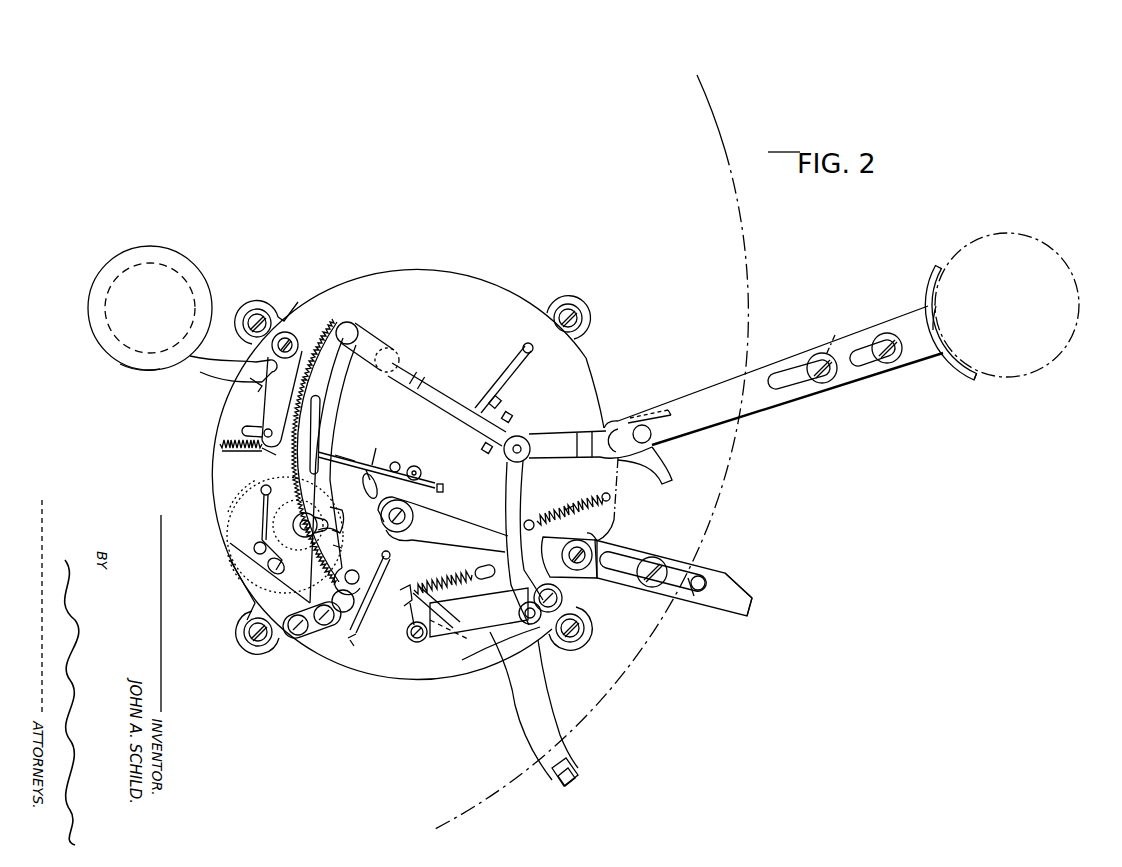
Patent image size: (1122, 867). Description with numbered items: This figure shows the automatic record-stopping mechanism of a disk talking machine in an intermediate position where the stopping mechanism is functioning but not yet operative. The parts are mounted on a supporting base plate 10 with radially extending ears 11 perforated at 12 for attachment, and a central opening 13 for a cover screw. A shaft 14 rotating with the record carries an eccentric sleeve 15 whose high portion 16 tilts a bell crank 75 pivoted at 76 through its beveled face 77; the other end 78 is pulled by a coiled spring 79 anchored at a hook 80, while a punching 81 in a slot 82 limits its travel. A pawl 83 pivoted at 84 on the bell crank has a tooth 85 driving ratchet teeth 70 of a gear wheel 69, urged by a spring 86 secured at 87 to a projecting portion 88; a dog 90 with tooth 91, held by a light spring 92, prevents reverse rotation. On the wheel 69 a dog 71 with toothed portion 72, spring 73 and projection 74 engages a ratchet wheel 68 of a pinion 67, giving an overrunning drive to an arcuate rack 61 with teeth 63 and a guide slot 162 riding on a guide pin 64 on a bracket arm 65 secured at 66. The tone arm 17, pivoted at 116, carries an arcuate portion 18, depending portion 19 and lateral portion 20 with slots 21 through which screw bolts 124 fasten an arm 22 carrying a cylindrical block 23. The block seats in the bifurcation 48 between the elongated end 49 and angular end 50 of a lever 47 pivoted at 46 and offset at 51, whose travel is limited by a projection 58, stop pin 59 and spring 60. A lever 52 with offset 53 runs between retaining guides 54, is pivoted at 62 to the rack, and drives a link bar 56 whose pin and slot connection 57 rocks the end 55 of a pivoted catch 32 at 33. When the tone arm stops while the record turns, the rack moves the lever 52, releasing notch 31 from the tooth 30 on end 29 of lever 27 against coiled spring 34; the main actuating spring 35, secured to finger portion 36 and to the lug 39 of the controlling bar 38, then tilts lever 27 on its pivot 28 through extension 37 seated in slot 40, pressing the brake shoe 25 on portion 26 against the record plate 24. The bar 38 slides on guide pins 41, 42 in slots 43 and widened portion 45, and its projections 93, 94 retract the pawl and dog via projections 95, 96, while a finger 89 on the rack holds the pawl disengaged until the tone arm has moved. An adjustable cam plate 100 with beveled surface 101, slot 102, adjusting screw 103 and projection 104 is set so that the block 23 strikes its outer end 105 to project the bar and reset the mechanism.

The supporting base plate 10 is at (423, 272).
The radially extending ears 11 is at (263, 306).
The perforations 12 is at (253, 312).
The central opening 13 is at (419, 466).
The shaft 14 is at (155, 272).
The eccentric sleeve 15 is at (192, 270).
The high portion 16 is at (140, 370).
The tone arm 17 is at (970, 380).
The arcuate portion 18 is at (935, 276).
The depending portion 19 is at (932, 333).
The lateral portion 20 is at (873, 372).
The elongated slots 21 is at (802, 384).
The finger or arm portion 22 is at (722, 388).
The cylindrical block or projection 23 is at (643, 425).
The disk record supporting plate 24 is at (603, 695).
The brake shoe 25 is at (566, 768).
The upwardly extending portion 26 is at (574, 770).
The lever 27 is at (540, 710).
The pivot 28 is at (562, 600).
The end of lever 29 is at (443, 607).
The tooth 30 is at (428, 592).
The notch 31 is at (412, 600).
The pivoted catch 32 is at (407, 603).
The pivot 33 is at (417, 643).
The coiled spring 34 is at (448, 570).
The main actuating spring 35 is at (550, 512).
The finger portion 36 is at (612, 499).
The extension 37 is at (542, 558).
The controlling bar 38 is at (470, 528).
The spring retaining lug 39 is at (528, 520).
The elongated slot 40 is at (571, 507).
The guide pin 41 is at (402, 533).
The guide pin 42 is at (586, 553).
The slot 43 is at (383, 501).
The widened portion 45 is at (590, 535).
The pivot 46 is at (531, 460).
The lever 47 is at (557, 440).
The bifurcation 48 is at (625, 427).
The elongated end 49 is at (673, 414).
The angularly extending end 50 is at (672, 477).
The offset 51 is at (590, 421).
The lever 52 is at (404, 377).
The offset 53 is at (427, 385).
The retaining guides 54 is at (512, 413).
The other end of bell crank lever 55 is at (491, 650).
The link bar 56 is at (506, 482).
The pin and slot connection 57 is at (544, 648).
The projection 58 is at (500, 398).
The stop pin 59 is at (398, 461).
The spring 60 is at (501, 375).
The arcuate rack 61 is at (336, 383).
The pivotal connection 62 is at (354, 331).
The teeth 63 is at (320, 330).
The guide pin 64 is at (337, 517).
The bracket arm 65 is at (297, 590).
The securing point 66 is at (300, 637).
The pinion 67 is at (286, 516).
The ratchet wheel 68 is at (273, 572).
The ratchet wheel 69 is at (230, 553).
The ratchet teeth 70 is at (227, 527).
The dog 71 is at (270, 565).
The toothed portion 72 is at (264, 531).
The spring 73 is at (263, 510).
The projecting portion 74 is at (255, 553).
The bell crank 75 is at (273, 393).
The pivot 76 is at (288, 340).
The beveled face 77 is at (180, 366).
The other end 78 is at (277, 413).
The coiled spring 79 is at (237, 452).
The punched support or hook 80 is at (217, 444).
The punching 81 is at (256, 380).
The slot 82 is at (262, 363).
The pawl 83 is at (273, 452).
The pivot end 84 is at (247, 428).
The tooth 85 is at (320, 450).
The spring 86 is at (428, 471).
The securing point 87 is at (441, 484).
The projecting portion 88 is at (348, 458).
The lug or finger 89 is at (343, 540).
The dog 90 is at (378, 572).
The tooth 91 is at (342, 550).
The light spring 92 is at (365, 616).
The projection 93 is at (370, 476).
The projection 94 is at (342, 520).
The projection 95 is at (375, 447).
The projection 96 is at (376, 500).
The adjustable cam plate 100 is at (717, 572).
The beveled surface 101 is at (745, 590).
The elongated slot 102 is at (693, 597).
The adjusting screw 103 is at (657, 590).
The projecting portion 104 is at (690, 597).
The outer end 105 is at (750, 608).
The pivotal point 116 is at (1017, 342).
The flat headed screw bolts 124 is at (832, 335).
The arcuate guide slot 162 is at (255, 478).